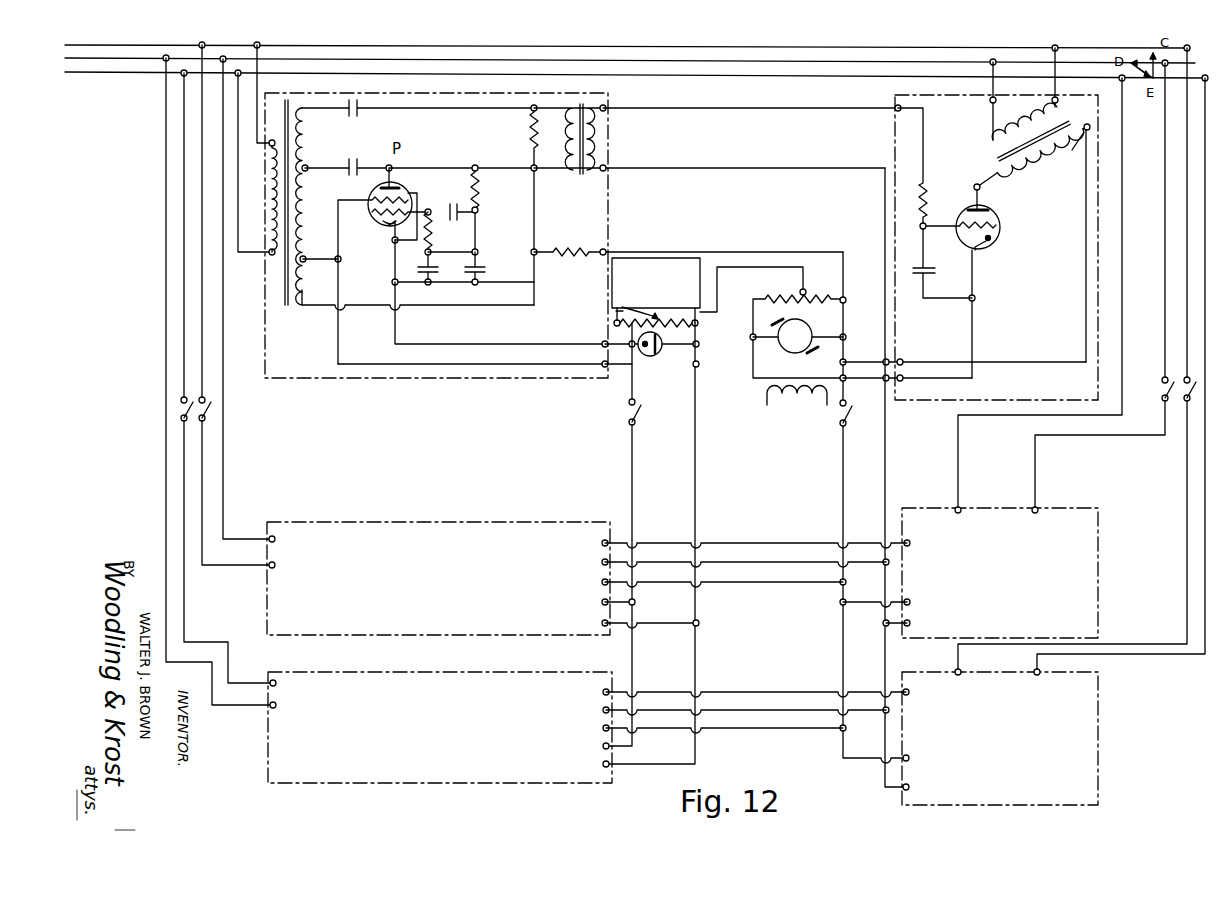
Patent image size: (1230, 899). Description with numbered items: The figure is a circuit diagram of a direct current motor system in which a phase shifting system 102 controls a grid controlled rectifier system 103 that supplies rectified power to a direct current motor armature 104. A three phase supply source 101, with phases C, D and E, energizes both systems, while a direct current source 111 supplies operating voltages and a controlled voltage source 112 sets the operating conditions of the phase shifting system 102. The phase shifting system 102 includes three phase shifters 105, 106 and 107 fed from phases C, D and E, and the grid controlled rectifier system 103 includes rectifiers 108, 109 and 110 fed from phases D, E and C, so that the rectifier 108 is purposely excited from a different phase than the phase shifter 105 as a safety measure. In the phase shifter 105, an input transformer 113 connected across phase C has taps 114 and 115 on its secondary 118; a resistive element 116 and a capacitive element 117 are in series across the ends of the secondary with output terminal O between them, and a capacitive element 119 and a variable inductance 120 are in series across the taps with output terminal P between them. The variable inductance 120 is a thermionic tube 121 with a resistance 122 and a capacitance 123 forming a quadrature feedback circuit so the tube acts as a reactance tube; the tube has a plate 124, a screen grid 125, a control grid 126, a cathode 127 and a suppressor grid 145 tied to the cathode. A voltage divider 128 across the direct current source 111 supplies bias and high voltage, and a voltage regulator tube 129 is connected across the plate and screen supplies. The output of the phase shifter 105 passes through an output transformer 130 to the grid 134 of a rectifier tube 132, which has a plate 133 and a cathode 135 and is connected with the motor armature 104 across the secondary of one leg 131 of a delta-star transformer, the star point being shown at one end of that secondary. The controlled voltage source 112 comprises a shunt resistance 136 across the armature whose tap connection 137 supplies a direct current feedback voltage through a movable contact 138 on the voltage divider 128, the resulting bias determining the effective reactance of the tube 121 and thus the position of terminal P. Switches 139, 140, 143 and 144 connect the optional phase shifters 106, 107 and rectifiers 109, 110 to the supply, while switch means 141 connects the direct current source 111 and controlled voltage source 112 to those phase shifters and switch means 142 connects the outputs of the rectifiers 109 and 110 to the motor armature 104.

The three phase supply source 101 is at (92, 44).
The phase shifting system 102 is at (238, 612).
The grid controlled rectifier system 103 is at (1142, 507).
The direct current motor armature 104 is at (786, 350).
The phase shifter 105 is at (313, 351).
The phase shifter 106 is at (448, 584).
The phase shifter 107 is at (450, 731).
The rectifier 108 is at (1040, 311).
The rectifier 109 is at (1015, 581).
The rectifier 110 is at (1013, 746).
The direct current source 111 is at (702, 258).
The controlled voltage source 112 is at (766, 287).
The input transformer 113 is at (328, 131).
The tap 114 is at (306, 165).
The tap 115 is at (304, 256).
The resistive element 116 is at (530, 143).
The capacitive element 117 is at (358, 112).
The secondary 118 is at (300, 277).
The capacitive element 119 is at (359, 158).
The variable inductance 120 is at (380, 289).
The thermionic tube 121 is at (419, 193).
The resistance 122 is at (479, 190).
The capacitance 123 is at (485, 271).
The plate 124 is at (395, 186).
The screen grid 125 is at (372, 203).
The control grid 126 is at (382, 220).
The cathode 127 is at (394, 236).
The voltage divider 128 is at (678, 324).
The voltage regulator tube 129 is at (664, 348).
The output transformer 130 is at (594, 196).
The leg 131 is at (1089, 116).
The rectifier tube 132 is at (1000, 217).
The plate 133 is at (976, 198).
The grid 134 is at (966, 219).
The cathode 135 is at (987, 244).
The shunt resistance 136 is at (800, 306).
The tap connection 137 is at (806, 289).
The movable contact 138 is at (614, 320).
The switch 139 is at (181, 410).
The switch 140 is at (212, 408).
The switch means 141 is at (628, 410).
The switch means 142 is at (873, 507).
The switch 143 is at (1168, 389).
The switch 144 is at (1169, 416).
The suppressor grid 145 is at (369, 195).